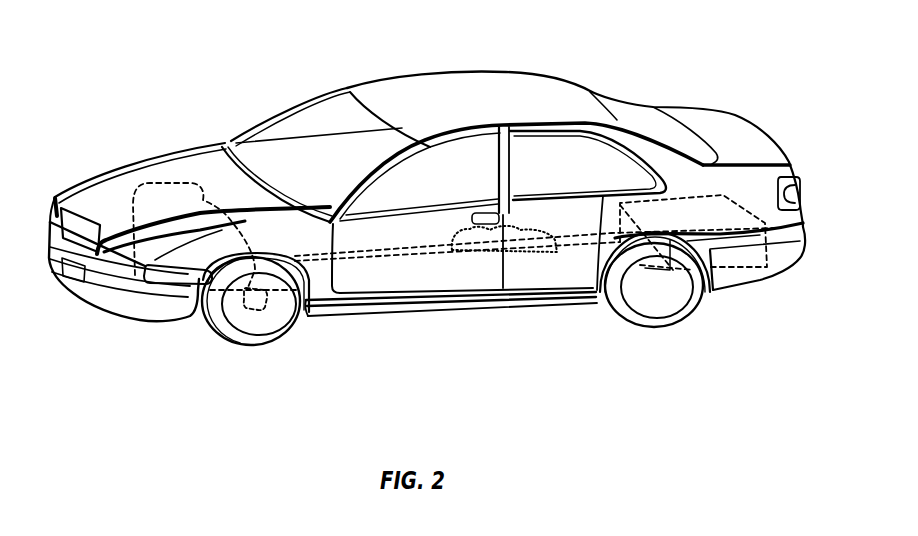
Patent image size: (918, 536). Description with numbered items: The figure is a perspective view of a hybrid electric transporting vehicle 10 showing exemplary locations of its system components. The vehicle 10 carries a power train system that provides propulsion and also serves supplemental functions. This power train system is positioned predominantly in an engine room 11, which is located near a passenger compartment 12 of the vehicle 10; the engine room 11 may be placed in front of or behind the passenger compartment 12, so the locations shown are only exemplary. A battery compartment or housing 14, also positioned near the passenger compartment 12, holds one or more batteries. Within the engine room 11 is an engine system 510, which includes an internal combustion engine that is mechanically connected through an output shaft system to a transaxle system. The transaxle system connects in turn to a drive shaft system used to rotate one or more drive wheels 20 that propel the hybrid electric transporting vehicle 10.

The hybrid electric transporting vehicle 10 is at (702, 100).
The engine room 11 is at (162, 306).
The passenger compartment 12 is at (340, 121).
The battery compartment or housing 14 is at (735, 275).
The drive wheels 20 is at (306, 336).
The engine system 510 is at (135, 186).